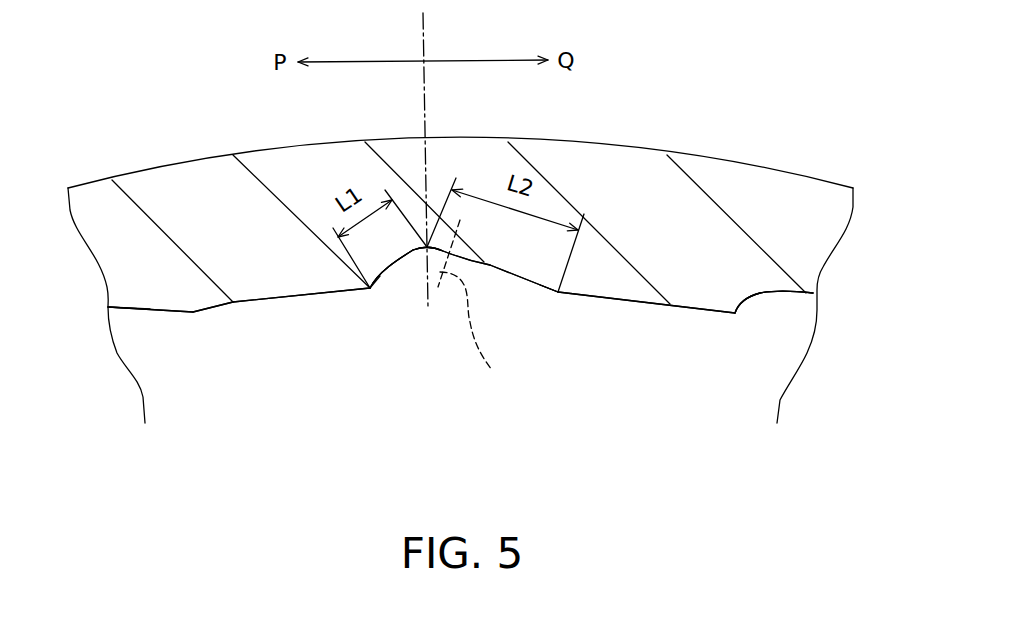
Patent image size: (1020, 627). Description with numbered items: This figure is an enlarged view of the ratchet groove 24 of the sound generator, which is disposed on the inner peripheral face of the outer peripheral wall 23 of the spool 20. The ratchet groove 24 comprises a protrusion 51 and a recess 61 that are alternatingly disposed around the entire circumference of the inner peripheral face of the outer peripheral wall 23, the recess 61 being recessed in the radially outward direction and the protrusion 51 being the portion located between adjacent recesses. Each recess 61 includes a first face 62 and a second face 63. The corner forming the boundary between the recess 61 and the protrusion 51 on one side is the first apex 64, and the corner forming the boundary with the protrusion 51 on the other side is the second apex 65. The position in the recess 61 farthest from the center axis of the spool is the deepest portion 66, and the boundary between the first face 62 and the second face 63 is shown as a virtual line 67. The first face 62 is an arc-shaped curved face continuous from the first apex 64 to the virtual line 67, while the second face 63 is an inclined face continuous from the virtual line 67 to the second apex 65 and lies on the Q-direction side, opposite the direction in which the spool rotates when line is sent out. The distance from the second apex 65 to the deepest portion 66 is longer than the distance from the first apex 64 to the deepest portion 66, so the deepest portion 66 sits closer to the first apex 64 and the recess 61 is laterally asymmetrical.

The spool 20 is at (620, 163).
The outer peripheral wall 23 is at (620, 163).
The ratchet groove 24 is at (362, 410).
The protrusion 51 is at (283, 323).
The recess 61 is at (173, 328).
The first face 62 is at (390, 266).
The second face 63 is at (147, 310).
The first apex 64 is at (371, 289).
The second apex 65 is at (193, 312).
The deepest portion 66 is at (424, 250).
The virtual line 67 is at (471, 311).